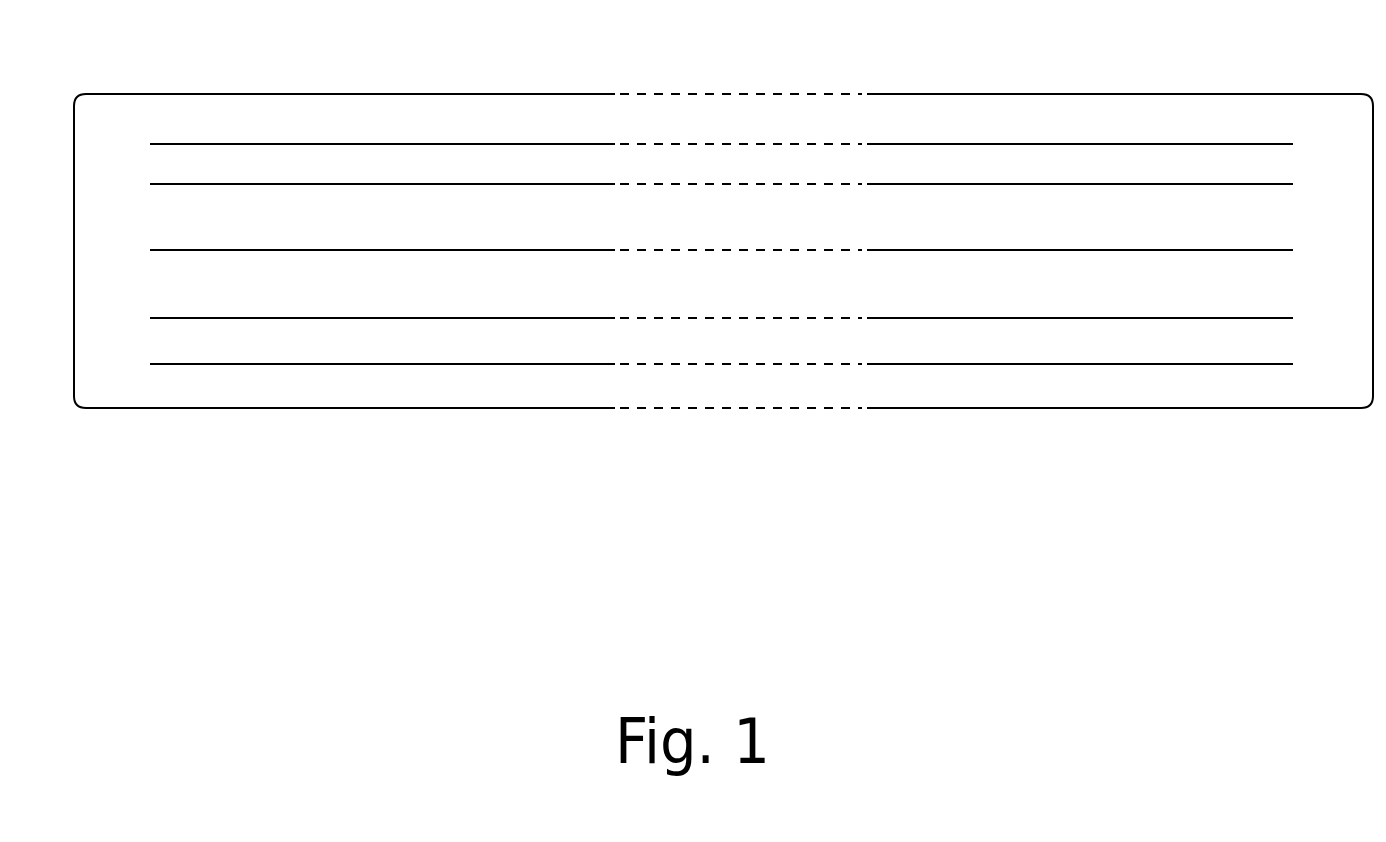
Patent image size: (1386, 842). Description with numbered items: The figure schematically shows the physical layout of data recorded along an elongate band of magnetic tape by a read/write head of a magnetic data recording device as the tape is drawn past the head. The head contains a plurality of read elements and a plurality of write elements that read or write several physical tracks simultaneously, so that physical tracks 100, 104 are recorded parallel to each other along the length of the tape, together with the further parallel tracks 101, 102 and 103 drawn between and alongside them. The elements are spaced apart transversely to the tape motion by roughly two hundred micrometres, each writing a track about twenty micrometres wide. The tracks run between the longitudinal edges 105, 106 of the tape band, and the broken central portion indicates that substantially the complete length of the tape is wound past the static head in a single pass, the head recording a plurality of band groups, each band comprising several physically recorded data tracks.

The physical track 100 is at (988, 251).
The optical fiber 101 is at (576, 317).
The optical fiber 102 is at (1133, 185).
The optical fiber 103 is at (337, 363).
The physical track 104 is at (1029, 143).
The ribbon bottom edge 105 is at (520, 409).
The ribbon top edge 106 is at (335, 93).